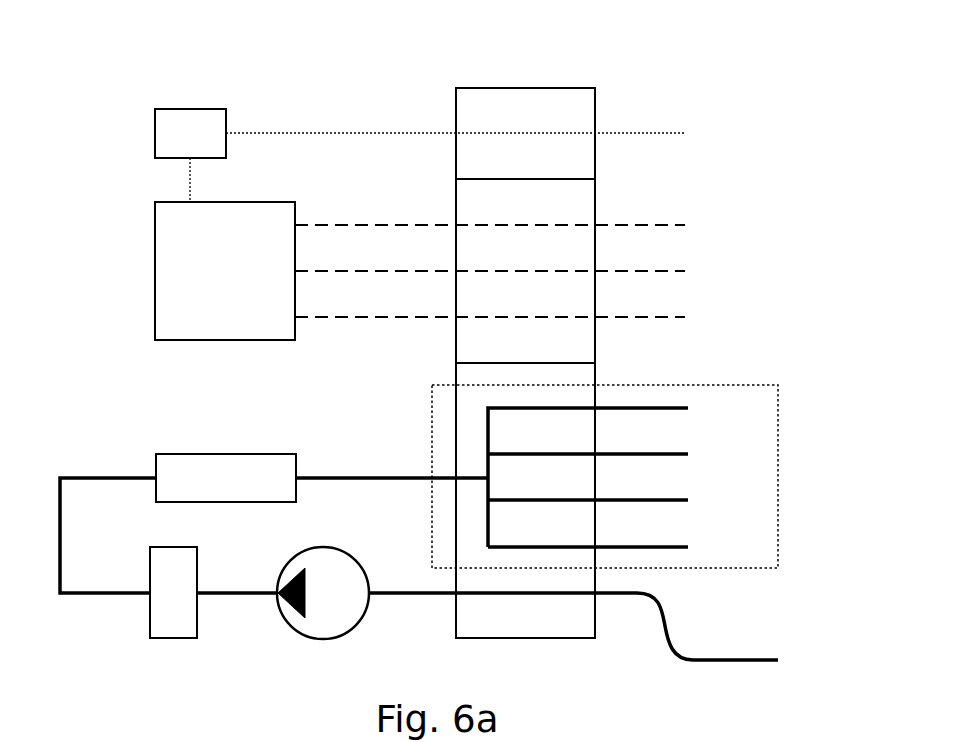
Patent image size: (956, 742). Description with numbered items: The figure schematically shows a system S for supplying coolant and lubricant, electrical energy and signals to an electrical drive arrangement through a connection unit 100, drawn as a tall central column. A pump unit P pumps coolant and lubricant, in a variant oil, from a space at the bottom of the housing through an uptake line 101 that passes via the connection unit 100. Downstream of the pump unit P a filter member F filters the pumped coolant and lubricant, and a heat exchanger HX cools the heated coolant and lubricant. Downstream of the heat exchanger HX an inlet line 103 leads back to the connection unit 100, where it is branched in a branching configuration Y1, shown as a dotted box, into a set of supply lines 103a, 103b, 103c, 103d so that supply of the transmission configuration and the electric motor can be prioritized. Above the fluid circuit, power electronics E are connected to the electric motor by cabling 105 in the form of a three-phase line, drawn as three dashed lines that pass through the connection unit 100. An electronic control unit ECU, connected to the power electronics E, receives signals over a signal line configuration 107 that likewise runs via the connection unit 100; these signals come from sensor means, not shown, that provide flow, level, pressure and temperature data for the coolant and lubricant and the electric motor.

The connection unit 100 is at (526, 88).
The uptake line 101 is at (732, 660).
The inlet line 103 is at (338, 477).
The supply line 103a is at (627, 408).
The supply line 103b is at (653, 454).
The supply line 103c is at (677, 500).
The supply line 103d is at (688, 548).
The cabling 105 is at (672, 317).
The signal line configuration 107 is at (312, 134).
The system S is at (333, 60).
The electronic control unit ECU is at (190, 155).
The power electronics E is at (225, 271).
The heat exchanger HX is at (226, 478).
The filter member F is at (173, 592).
The pump unit P is at (302, 549).
The branching configuration Y1 is at (738, 385).